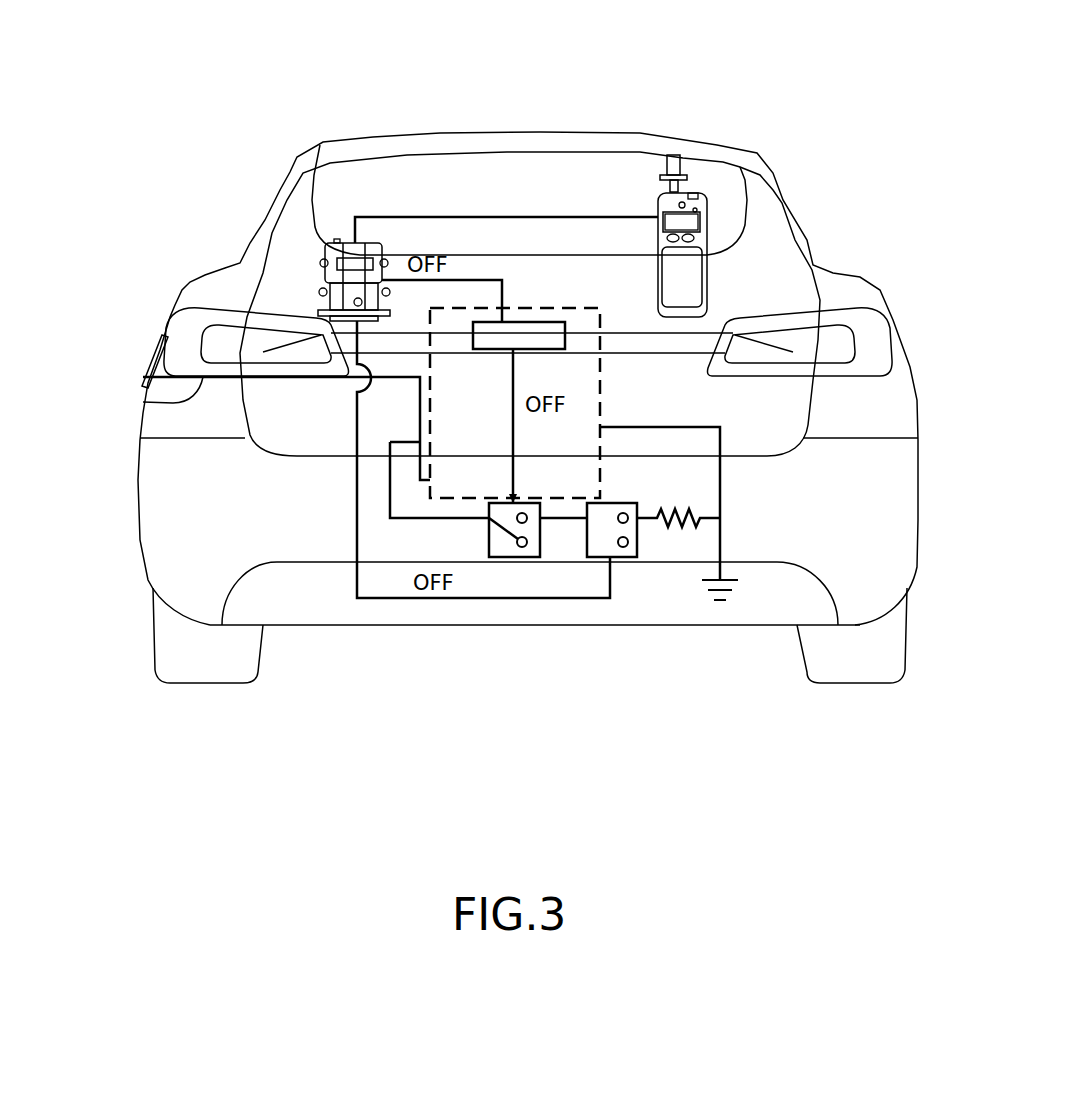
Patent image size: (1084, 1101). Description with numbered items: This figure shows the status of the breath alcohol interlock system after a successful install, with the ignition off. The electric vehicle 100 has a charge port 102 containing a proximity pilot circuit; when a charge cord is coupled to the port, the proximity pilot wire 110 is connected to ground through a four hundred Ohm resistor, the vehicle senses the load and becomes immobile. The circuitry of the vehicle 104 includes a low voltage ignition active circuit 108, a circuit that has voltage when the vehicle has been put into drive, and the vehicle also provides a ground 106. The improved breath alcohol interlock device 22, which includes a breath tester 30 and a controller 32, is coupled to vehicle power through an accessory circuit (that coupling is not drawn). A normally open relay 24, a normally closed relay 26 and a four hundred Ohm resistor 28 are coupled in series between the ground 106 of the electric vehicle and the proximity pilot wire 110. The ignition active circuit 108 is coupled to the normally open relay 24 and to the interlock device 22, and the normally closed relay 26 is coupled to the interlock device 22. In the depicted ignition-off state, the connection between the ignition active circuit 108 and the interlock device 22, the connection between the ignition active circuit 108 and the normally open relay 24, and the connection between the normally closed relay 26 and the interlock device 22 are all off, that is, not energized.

The breath alcohol interlock device 22 is at (515, 48).
The normally open relay 24 is at (489, 532).
The normally closed relay 26 is at (610, 504).
The 400 Ohm resistor 28 is at (687, 512).
The breath tester 30 is at (640, 203).
The controller 32 is at (343, 234).
The vehicle 100 is at (798, 188).
The charge port 102 is at (138, 353).
The circuitry of the vehicle 104 is at (600, 413).
The ground 106 is at (748, 587).
The low voltage ignition active circuit 108 is at (490, 350).
The proximity pilot wire 110 is at (143, 402).